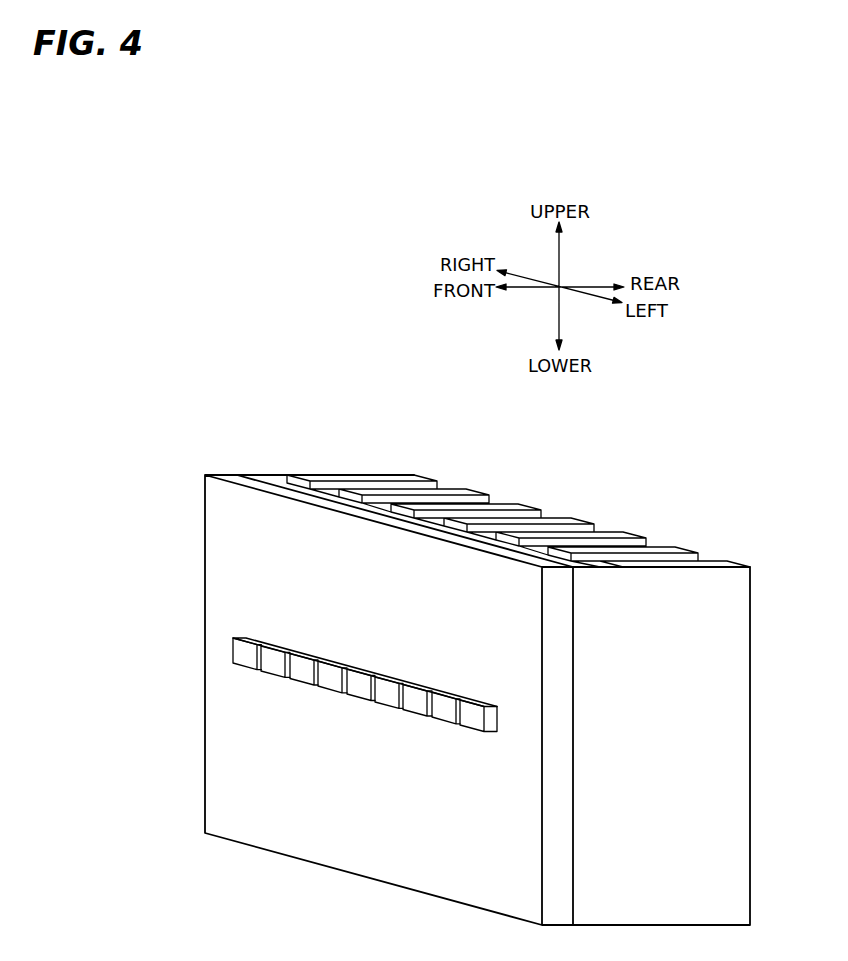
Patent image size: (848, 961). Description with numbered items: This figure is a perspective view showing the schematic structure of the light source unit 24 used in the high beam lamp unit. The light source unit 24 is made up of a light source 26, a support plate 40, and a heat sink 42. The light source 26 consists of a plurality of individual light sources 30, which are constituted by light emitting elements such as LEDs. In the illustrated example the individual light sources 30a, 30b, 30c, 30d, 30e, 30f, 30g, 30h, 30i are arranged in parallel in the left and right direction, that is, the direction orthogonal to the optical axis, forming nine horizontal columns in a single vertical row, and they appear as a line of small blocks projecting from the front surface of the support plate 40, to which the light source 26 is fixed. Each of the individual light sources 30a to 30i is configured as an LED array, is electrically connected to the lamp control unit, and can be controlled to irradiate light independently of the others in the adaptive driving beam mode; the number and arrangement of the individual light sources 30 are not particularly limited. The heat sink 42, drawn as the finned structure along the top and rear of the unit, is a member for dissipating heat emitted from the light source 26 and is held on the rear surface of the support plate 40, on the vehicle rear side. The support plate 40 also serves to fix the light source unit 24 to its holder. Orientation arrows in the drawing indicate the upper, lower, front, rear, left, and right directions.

The light source unit 24 is at (447, 651).
The light source 26 is at (377, 676).
The individual light sources 30 is at (377, 651).
The individual light source 30a is at (243, 641).
The individual light source 30b is at (271, 649).
The individual light source 30c is at (300, 657).
The individual light source 30d is at (328, 664).
The individual light source 30e is at (357, 672).
The individual light source 30f is at (385, 680).
The individual light source 30g is at (413, 688).
The individual light source 30h is at (442, 695).
The individual light source 30i is at (489, 689).
The support plate 40 is at (223, 530).
The heat sink 42 is at (613, 530).